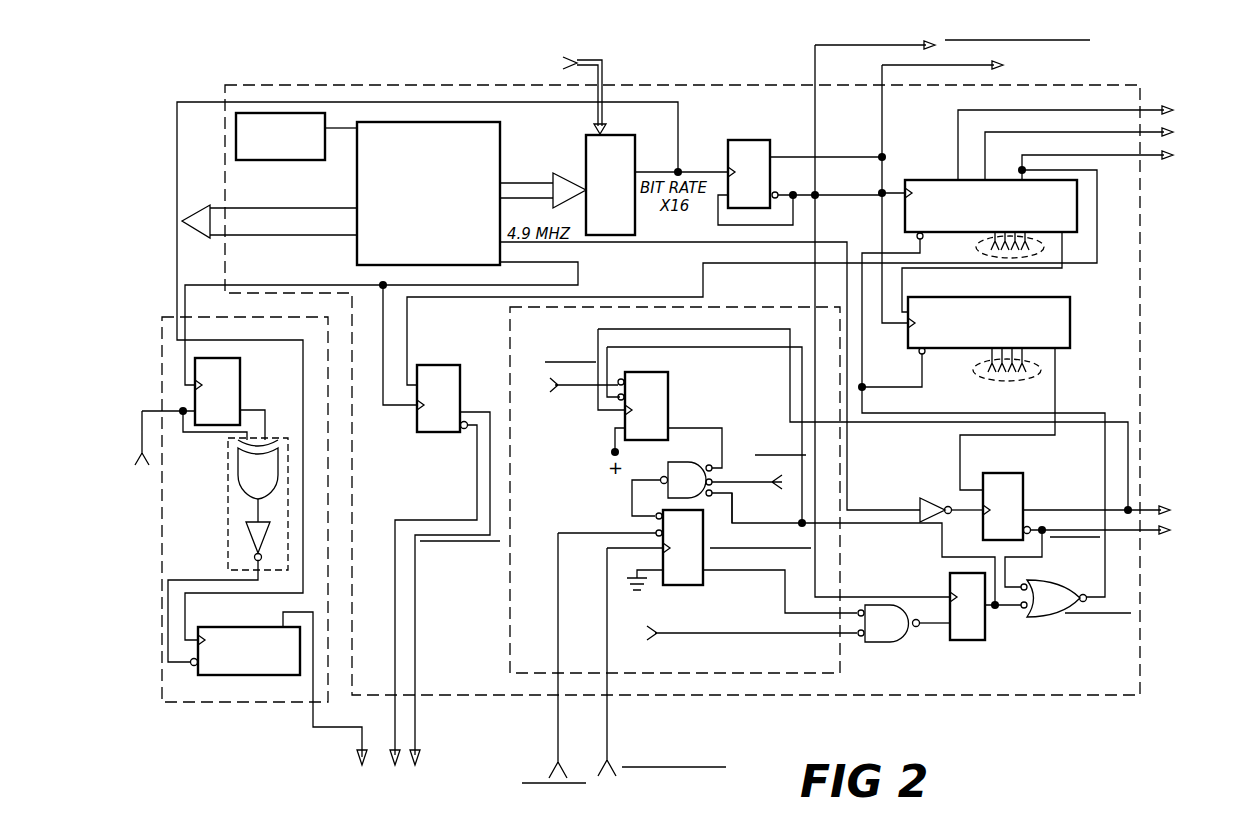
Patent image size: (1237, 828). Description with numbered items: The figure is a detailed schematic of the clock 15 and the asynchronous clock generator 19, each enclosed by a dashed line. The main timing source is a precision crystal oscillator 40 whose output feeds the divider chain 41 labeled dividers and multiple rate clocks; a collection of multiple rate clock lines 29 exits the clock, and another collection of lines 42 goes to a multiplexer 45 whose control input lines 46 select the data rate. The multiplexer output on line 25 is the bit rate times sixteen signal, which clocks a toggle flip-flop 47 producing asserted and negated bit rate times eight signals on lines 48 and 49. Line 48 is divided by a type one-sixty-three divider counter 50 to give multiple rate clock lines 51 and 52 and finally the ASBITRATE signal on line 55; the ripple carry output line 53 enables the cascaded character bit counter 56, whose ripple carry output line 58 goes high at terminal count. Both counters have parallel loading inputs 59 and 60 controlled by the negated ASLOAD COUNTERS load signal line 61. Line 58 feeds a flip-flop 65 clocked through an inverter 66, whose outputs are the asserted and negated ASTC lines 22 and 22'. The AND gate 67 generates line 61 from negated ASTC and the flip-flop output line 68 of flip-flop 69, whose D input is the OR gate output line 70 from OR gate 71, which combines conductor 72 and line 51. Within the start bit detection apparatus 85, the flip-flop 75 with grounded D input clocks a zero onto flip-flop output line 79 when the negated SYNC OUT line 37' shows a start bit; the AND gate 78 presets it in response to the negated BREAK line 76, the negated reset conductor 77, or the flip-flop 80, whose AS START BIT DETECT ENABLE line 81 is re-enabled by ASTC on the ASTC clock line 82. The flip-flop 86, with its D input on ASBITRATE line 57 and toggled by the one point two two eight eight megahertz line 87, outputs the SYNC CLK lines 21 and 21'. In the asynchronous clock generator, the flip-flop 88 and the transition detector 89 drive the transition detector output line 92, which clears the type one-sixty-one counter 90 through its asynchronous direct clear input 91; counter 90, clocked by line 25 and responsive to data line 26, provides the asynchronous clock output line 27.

The clock 15 is at (781, 86).
The asynchronous clock generator 19 is at (219, 703).
The SYNC CLK line 21 is at (445, 588).
The SYNC CLK line 21' is at (429, 594).
The ASTC line 22 is at (1109, 497).
The negated ASTC line 22' is at (1102, 552).
The BITRATE X 16 line 25 is at (177, 138).
The data line 26 is at (150, 410).
The asynchronous clock output line 27 is at (365, 756).
The multiple rate clock lines 29 is at (208, 209).
The negated SYNC OUT line 37' is at (662, 668).
The crystal oscillator 40 is at (259, 161).
The divider chain 41 is at (502, 168).
The collection of lines 42 is at (541, 180).
The multiplexer 45 is at (625, 135).
The control input lines 46 is at (606, 76).
The toggle flip-flop 47 is at (740, 140).
The ASBITRATE X 8 line 48 is at (885, 140).
The negated ASBITRATE X 8 line 49 is at (818, 140).
The divider counter 50 is at (928, 180).
The multiple rate clock line 51 is at (1150, 108).
The multiple rate clock line 52 is at (1150, 131).
The ripple carry output line 53 is at (1062, 270).
The ASBITRATE line 55 is at (1150, 156).
The character bit counter 56 is at (1073, 321).
The ASBITRATE line 57 is at (1098, 226).
The ripple carry output line 58 is at (1058, 400).
The parallel loading inputs 59 is at (978, 246).
The parallel loading inputs 60 is at (975, 371).
The load signal line 61 is at (953, 406).
The flip-flop 65 is at (990, 473).
The inverter 66 is at (917, 498).
The AND gate 67 is at (1058, 582).
The flip-flop output line 68 is at (1003, 612).
The flip-flop 69 is at (965, 642).
The OR gate output line 70 is at (920, 628).
The OR gate 71 is at (868, 645).
The conductor 72 is at (785, 591).
The flip-flop 75 is at (705, 538).
The negated BREAK line 76 is at (556, 725).
The negated reset conductor 77 is at (590, 389).
The AND gate 78 is at (680, 464).
The flip-flop output line 79 is at (652, 579).
The flip-flop 80 is at (670, 372).
The AS START BIT DETECT ENABLE line 81 is at (723, 456).
The ASTC clock line 82 is at (598, 336).
The start bit detection apparatus 85 is at (510, 600).
The flip-flop 86 is at (432, 365).
The 1.2288 megahertz line 87 is at (578, 288).
The flip-flop 88 is at (240, 368).
The transition detector 89 is at (228, 466).
The counter 90 is at (218, 627).
The asynchronous direct clear input 91 is at (195, 669).
The transition detector output line 92 is at (208, 581).